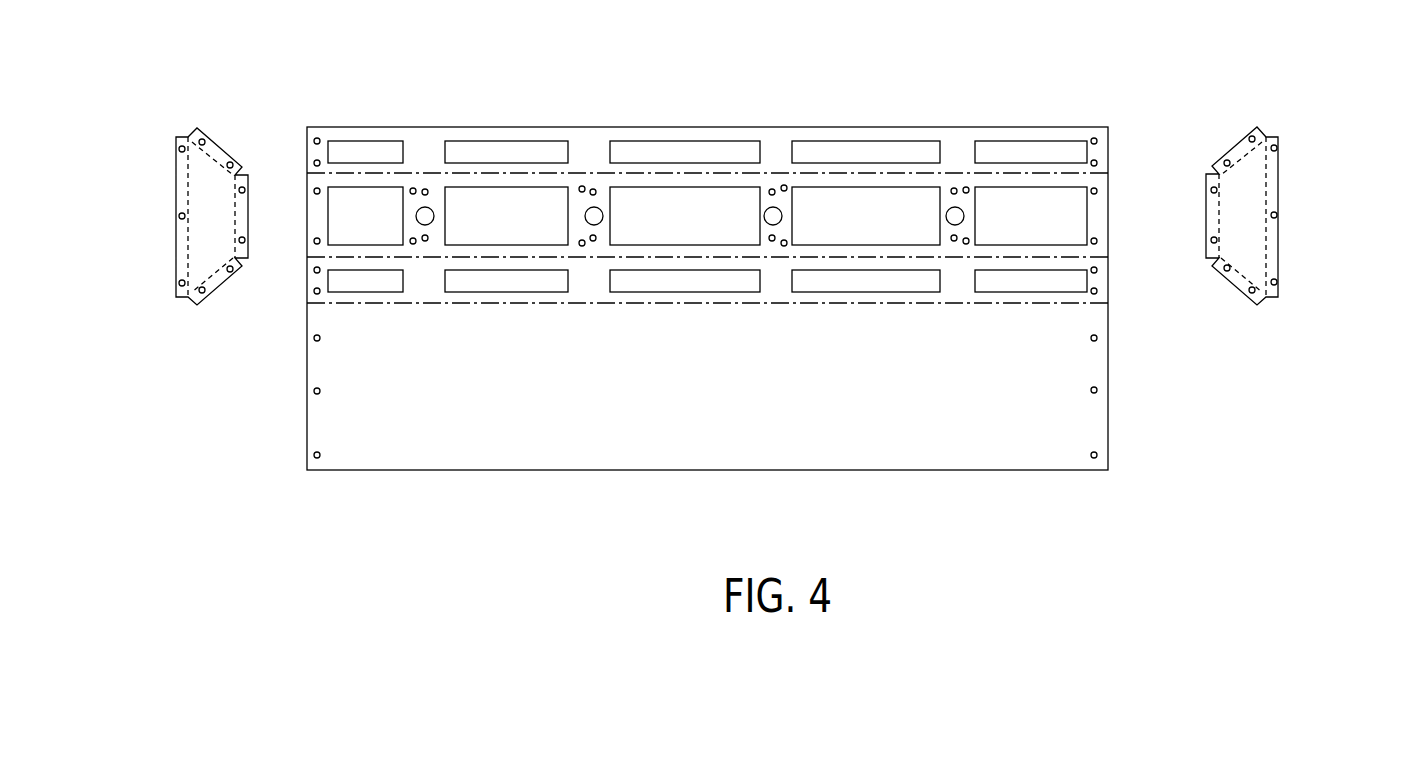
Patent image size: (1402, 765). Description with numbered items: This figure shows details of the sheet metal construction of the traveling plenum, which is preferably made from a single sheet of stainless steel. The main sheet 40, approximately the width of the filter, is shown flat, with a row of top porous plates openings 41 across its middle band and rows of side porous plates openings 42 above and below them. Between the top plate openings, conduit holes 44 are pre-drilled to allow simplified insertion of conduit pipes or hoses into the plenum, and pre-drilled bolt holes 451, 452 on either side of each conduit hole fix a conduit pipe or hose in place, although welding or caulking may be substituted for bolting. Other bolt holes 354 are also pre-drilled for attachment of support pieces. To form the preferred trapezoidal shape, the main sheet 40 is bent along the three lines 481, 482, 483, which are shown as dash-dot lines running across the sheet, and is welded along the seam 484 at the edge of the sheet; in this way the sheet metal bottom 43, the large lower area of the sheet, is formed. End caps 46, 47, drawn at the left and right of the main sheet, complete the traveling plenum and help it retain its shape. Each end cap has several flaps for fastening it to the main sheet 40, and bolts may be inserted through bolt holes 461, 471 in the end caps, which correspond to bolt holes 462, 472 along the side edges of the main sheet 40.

The main sheet 40 is at (745, 443).
The top porous plates openings 41 is at (372, 228).
The side porous plates openings 42 is at (907, 156).
The sheet metal bottom 43 is at (720, 407).
The conduit holes 44 is at (595, 215).
The bolt holes 354 is at (413, 191).
The bolt hole 451 is at (773, 192).
The bolt hole 452 is at (772, 241).
The end cap 46 is at (208, 240).
The bolt hole 461 is at (202, 291).
The end cap 47 is at (1247, 245).
The bolt hole 471 is at (1274, 282).
The bolt hole 472 is at (1094, 163).
The bend line 481 is at (306, 303).
The bend line 482 is at (306, 257).
The bend line 483 is at (305, 173).
The seam 484 is at (307, 127).
The bolt hole 462 is at (317, 140).